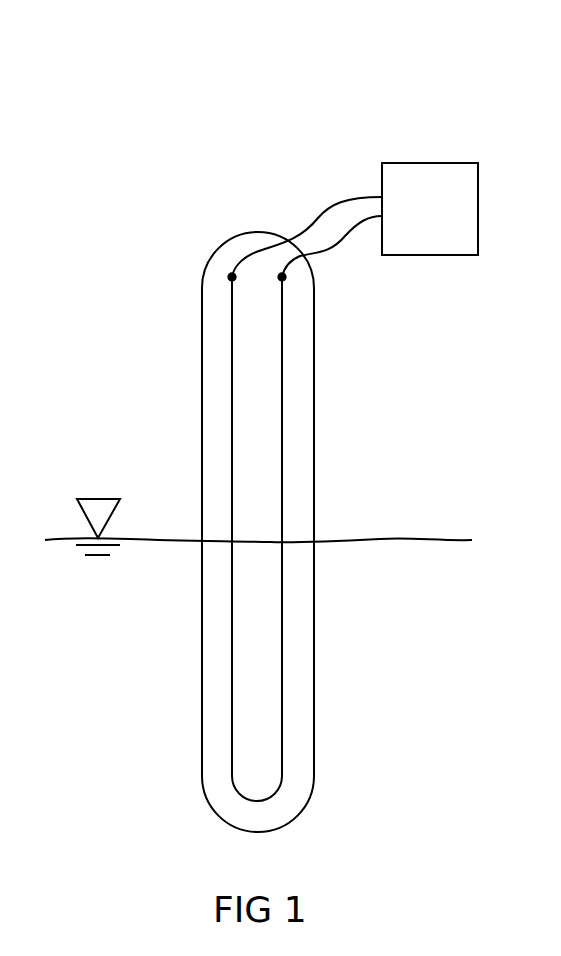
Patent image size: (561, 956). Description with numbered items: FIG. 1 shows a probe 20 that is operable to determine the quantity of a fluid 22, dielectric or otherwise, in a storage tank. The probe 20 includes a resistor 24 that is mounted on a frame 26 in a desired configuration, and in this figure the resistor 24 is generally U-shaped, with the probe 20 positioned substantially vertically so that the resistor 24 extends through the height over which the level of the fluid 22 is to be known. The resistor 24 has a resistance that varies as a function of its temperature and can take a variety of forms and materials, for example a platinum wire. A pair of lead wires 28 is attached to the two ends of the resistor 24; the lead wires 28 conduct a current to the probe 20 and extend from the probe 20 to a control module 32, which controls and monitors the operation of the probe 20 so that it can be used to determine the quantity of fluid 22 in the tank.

The probe 20 is at (312, 119).
The fluid 22 is at (422, 539).
The resistor 24 is at (285, 408).
The frame 26 is at (300, 350).
The lead wires 28 is at (353, 157).
The control module 32 is at (436, 170).